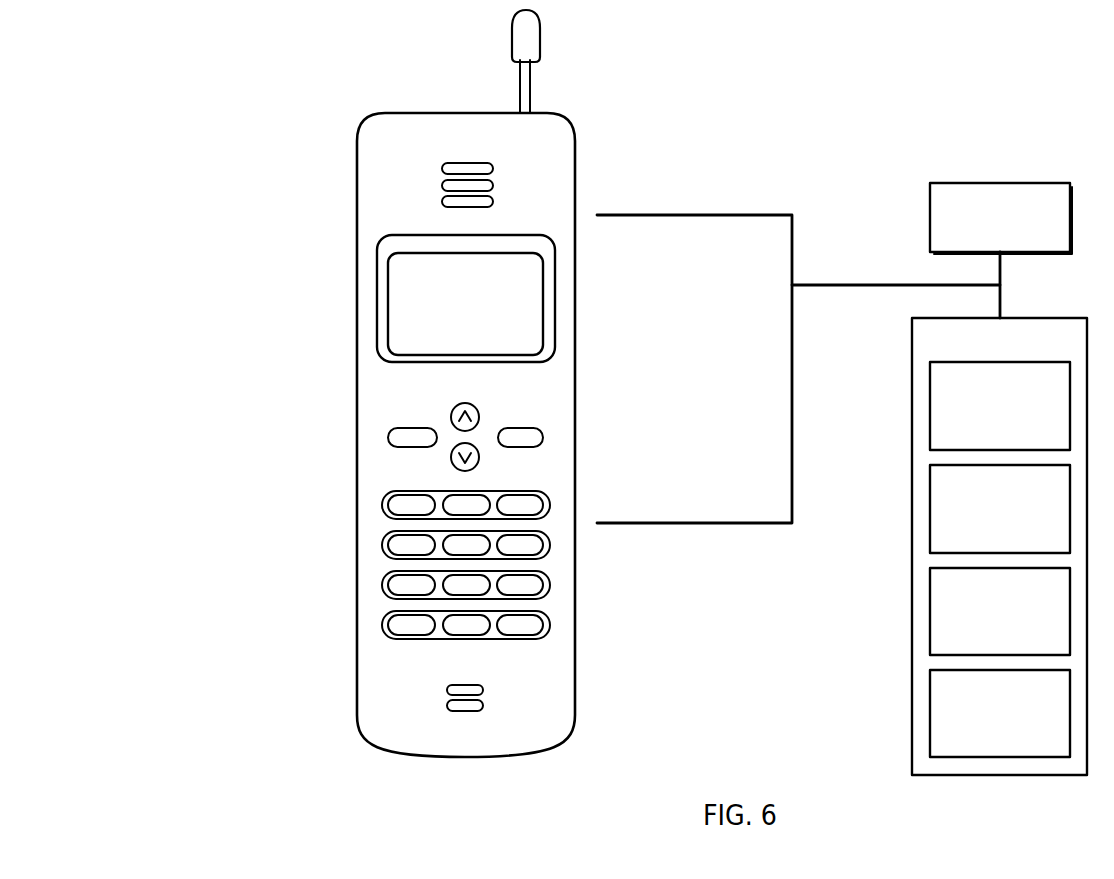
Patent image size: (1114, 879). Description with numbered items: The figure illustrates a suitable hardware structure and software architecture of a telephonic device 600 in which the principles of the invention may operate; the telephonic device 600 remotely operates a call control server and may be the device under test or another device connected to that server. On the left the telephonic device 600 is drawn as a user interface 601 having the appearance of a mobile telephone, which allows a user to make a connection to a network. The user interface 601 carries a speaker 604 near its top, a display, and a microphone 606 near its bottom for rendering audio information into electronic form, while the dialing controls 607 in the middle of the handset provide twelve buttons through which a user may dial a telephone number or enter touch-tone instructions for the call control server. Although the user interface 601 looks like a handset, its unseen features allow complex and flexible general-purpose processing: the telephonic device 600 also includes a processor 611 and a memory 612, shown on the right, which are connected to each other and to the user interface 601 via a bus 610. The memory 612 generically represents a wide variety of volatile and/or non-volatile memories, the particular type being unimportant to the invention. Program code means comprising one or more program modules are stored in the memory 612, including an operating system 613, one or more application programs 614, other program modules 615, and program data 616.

The telephonic device 600 is at (832, 90).
The user interface 601 is at (575, 760).
The speaker 604 is at (340, 178).
The microphone 606 is at (335, 693).
The dialing controls 607 is at (345, 644).
The bus 610 is at (828, 283).
The processor 611 is at (1014, 241).
The memory 612 is at (1053, 354).
The operating system 613 is at (1013, 439).
The application programs 614 is at (1013, 542).
The other program modules 615 is at (1013, 646).
The program data 616 is at (1013, 749).